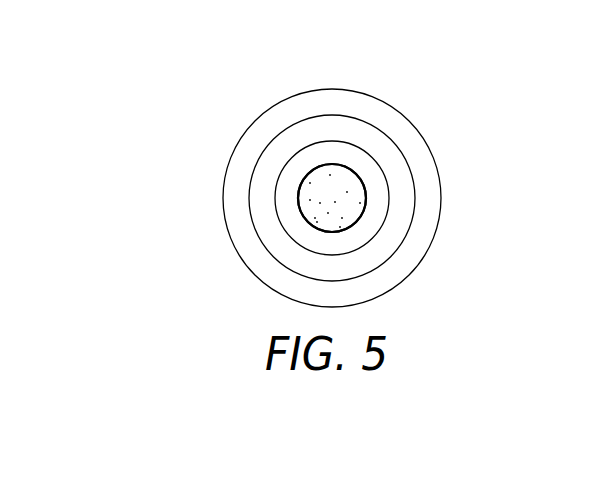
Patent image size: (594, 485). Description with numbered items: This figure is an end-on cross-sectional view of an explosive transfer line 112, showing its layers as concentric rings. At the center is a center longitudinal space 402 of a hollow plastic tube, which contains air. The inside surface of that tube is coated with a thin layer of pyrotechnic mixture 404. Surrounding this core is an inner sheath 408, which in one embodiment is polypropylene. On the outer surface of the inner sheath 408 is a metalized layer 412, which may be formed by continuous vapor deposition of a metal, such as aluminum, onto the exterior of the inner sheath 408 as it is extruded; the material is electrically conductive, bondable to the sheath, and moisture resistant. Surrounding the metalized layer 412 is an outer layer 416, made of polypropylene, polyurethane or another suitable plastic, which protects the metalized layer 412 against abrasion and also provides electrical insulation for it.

The explosive transfer line 112 is at (330, 159).
The center longitudinal space 402 is at (345, 187).
The pyrotechnic mixture 404 is at (305, 219).
The inner sheath 408 is at (403, 218).
The metalized layer 412 is at (400, 253).
The outer layer 416 is at (436, 173).